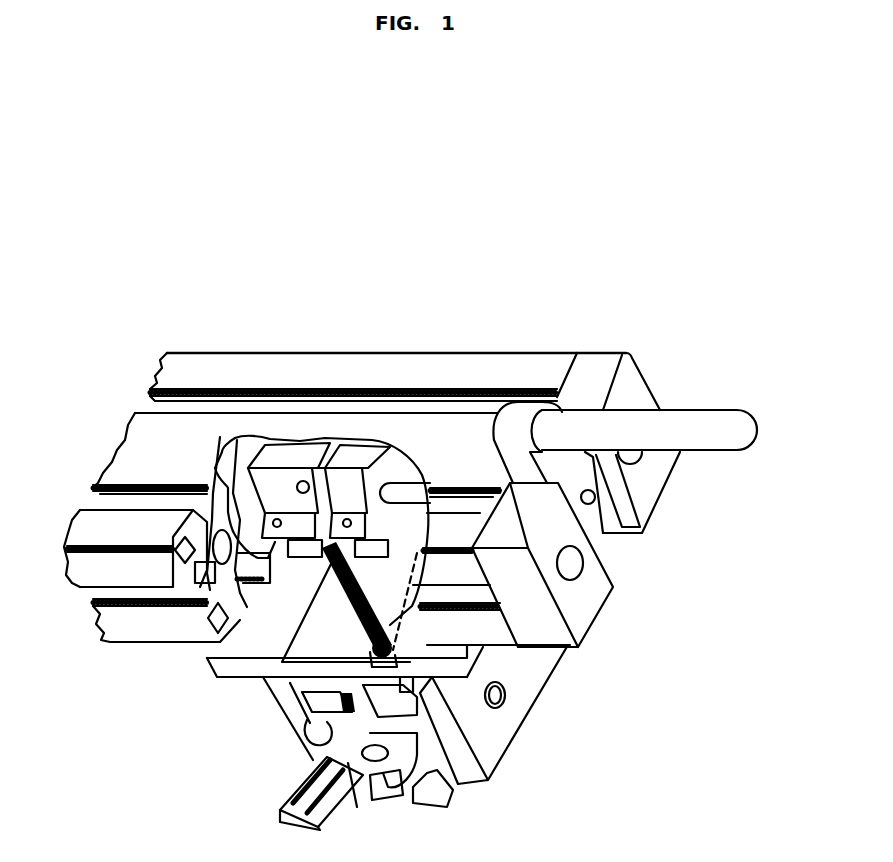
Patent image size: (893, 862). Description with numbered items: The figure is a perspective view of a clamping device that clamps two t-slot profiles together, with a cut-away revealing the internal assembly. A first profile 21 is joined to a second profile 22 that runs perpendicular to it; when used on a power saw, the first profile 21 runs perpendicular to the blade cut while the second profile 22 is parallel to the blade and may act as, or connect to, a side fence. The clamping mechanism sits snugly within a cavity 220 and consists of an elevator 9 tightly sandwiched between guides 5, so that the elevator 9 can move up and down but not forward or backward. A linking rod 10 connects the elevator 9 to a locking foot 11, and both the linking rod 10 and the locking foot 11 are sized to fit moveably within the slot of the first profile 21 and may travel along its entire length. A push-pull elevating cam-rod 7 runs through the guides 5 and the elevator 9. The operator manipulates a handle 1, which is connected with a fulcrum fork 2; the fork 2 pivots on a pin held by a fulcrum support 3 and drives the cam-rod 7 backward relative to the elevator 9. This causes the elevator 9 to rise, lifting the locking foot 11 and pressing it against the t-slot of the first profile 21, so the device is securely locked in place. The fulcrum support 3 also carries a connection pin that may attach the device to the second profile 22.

The handle 1 is at (680, 406).
The fulcrum fork 2 is at (502, 468).
The fulcrum support 3 is at (660, 487).
The guides 5 is at (369, 450).
The push-pull elevating cam-rod 7 is at (412, 482).
The elevator 9 is at (298, 452).
The linking rod 10 is at (363, 618).
The locking foot 11 is at (296, 786).
The first profile 21 is at (430, 793).
The second profile 22 is at (160, 628).
The cavity 220 is at (240, 440).